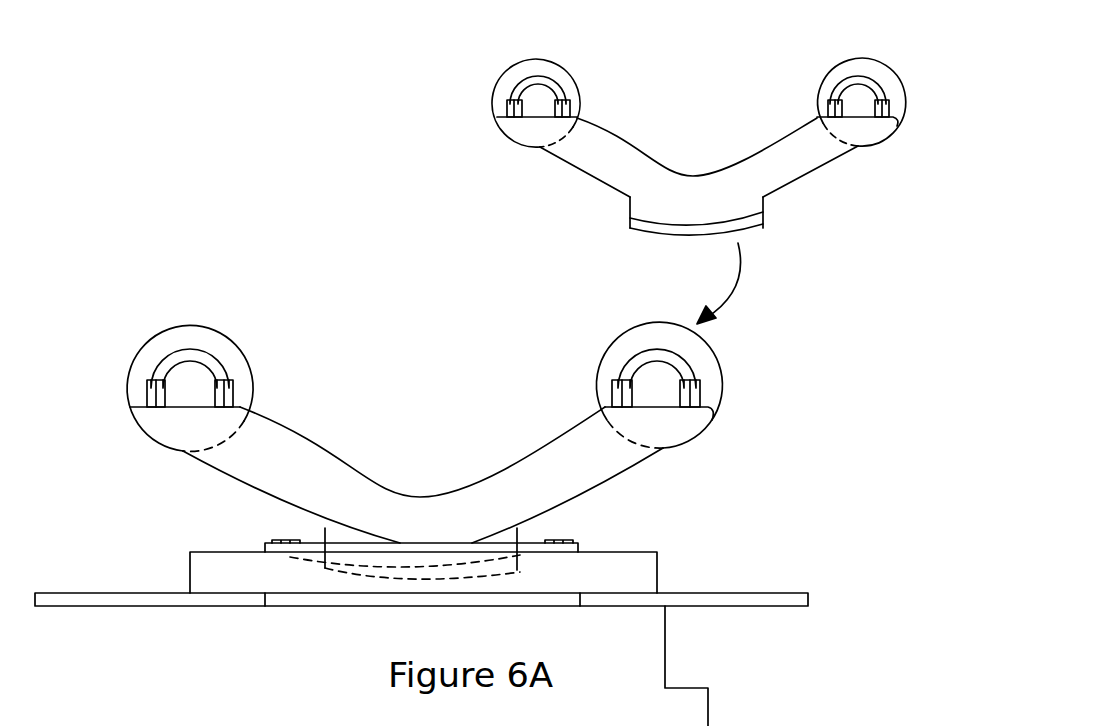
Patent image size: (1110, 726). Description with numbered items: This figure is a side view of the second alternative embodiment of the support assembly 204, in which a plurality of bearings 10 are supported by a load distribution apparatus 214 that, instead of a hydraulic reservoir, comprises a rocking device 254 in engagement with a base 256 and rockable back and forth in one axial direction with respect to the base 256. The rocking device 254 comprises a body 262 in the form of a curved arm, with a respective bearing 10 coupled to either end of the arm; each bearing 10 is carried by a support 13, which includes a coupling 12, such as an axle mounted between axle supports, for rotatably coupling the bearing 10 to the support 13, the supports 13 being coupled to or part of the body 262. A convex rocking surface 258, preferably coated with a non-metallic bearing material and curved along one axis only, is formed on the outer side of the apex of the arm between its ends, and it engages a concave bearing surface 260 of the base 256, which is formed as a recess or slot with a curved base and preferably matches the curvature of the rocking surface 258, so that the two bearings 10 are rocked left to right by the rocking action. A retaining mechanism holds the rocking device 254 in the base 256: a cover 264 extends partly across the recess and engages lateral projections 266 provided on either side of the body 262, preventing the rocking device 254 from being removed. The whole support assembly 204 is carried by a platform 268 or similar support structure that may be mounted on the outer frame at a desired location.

The bearing 10 is at (213, 347).
The coupling 12 is at (650, 395).
The support 13 is at (150, 390).
The support assembly 204 is at (455, 400).
The load distribution apparatus 214 is at (606, 504).
The rocking device 254 is at (313, 447).
The base 256 is at (208, 572).
The rocking surface 258 is at (742, 230).
The bearing surface 260 is at (362, 577).
The body 262 is at (603, 152).
The cover 264 is at (265, 543).
The lateral projection 266 is at (677, 225).
The platform 268 is at (762, 596).